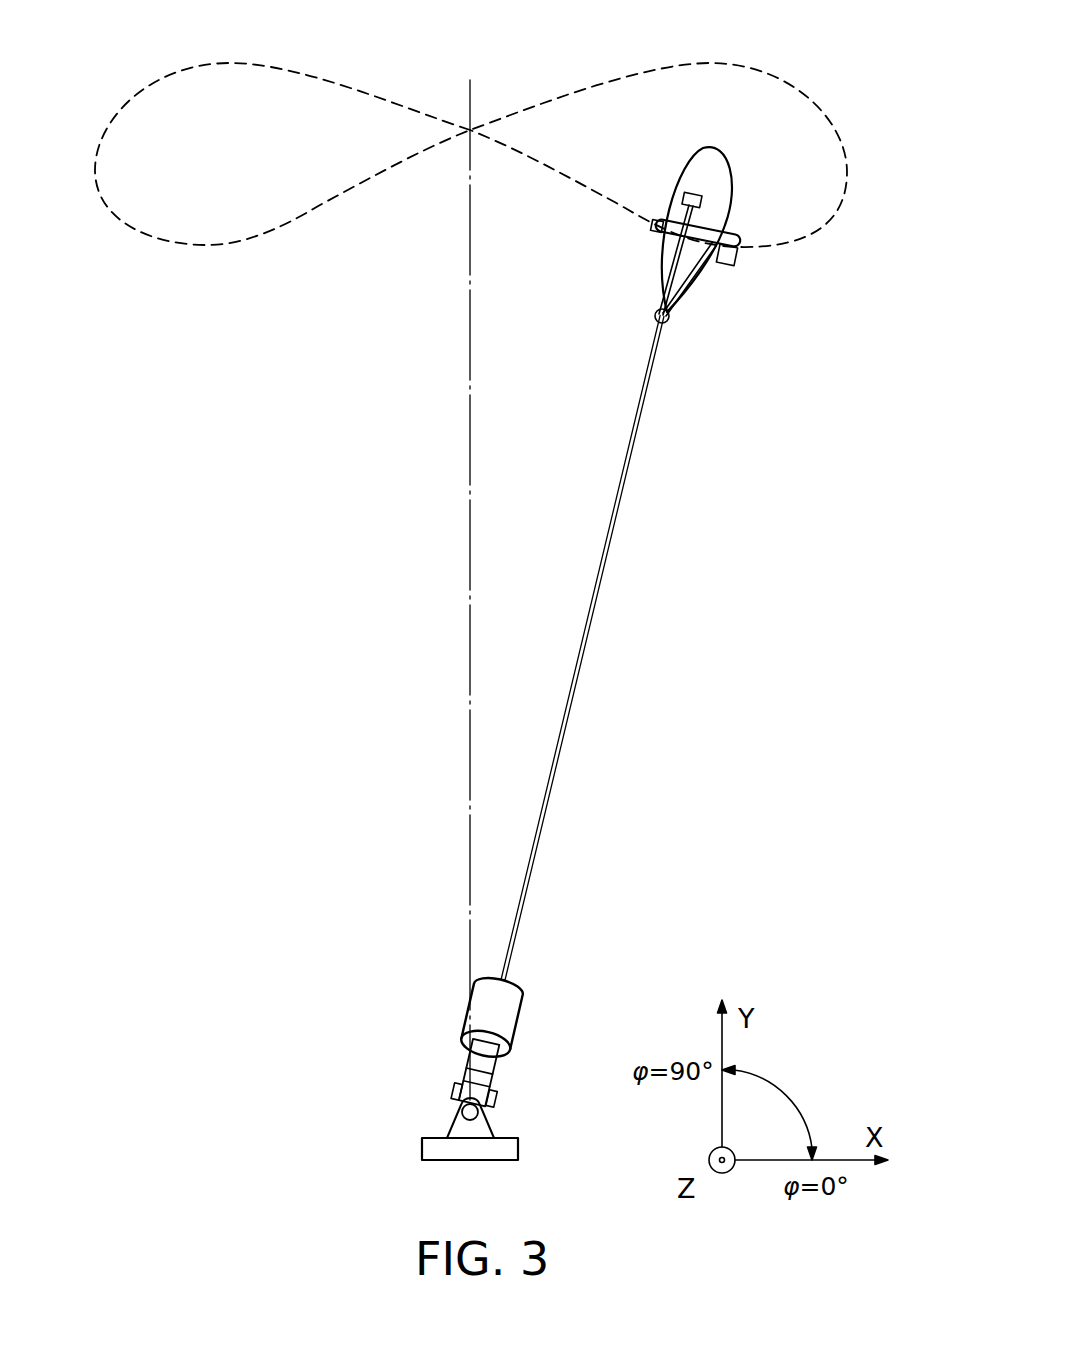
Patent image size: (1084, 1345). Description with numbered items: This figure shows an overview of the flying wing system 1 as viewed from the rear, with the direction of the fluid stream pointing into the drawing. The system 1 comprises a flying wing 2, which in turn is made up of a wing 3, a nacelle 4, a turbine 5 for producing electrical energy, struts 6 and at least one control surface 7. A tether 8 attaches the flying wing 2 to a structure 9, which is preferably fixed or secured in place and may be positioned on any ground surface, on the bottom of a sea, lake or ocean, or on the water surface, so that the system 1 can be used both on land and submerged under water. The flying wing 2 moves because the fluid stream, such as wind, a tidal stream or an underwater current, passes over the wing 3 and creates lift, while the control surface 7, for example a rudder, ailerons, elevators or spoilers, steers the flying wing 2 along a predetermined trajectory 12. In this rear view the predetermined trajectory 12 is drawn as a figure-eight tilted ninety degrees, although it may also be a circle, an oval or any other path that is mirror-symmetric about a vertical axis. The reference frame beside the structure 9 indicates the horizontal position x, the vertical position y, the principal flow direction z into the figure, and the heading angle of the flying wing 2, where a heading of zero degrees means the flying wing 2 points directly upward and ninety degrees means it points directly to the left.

The system 1 is at (832, 447).
The flying wing 2 is at (650, 175).
The wing 3 is at (713, 182).
The nacelle 4 is at (649, 239).
The turbine 5 is at (657, 243).
The struts 6 is at (691, 322).
The control surface 7 is at (735, 254).
The tether 8 is at (588, 640).
The structure 9 is at (428, 1052).
The predetermined trajectory 12 is at (757, 77).